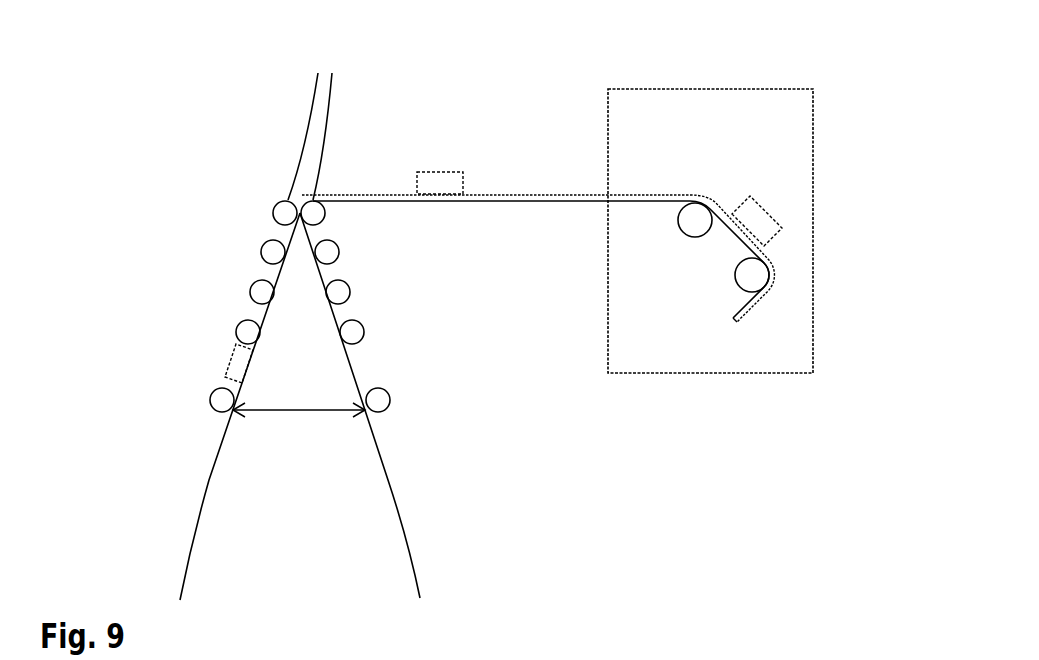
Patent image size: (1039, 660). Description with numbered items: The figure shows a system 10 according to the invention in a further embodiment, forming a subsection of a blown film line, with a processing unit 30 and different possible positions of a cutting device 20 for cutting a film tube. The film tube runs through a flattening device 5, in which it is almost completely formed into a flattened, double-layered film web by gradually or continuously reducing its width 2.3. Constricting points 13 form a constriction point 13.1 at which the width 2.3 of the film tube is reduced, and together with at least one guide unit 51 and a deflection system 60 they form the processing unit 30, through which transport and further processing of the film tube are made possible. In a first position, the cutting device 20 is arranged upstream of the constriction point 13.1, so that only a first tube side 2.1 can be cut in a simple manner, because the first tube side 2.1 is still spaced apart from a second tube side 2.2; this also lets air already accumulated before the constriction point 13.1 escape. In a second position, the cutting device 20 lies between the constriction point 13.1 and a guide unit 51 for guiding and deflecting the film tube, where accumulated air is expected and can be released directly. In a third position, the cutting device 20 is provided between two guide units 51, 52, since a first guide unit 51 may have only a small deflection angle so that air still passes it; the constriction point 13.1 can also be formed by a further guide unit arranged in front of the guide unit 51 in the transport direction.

The system 10 is at (177, 82).
The constricting points 13 is at (310, 117).
The constriction point 13.1 is at (247, 213).
The first tube side 2.1 is at (208, 480).
The second tube side 2.2 is at (387, 467).
The width of the film tube 2.3 is at (268, 413).
The flattening device 5 is at (368, 252).
The cutting device 20 is at (448, 178).
The processing unit 30 is at (827, 63).
The guide unit 51 is at (760, 277).
The roller 52 is at (753, 338).
The deflection system 60 is at (782, 362).